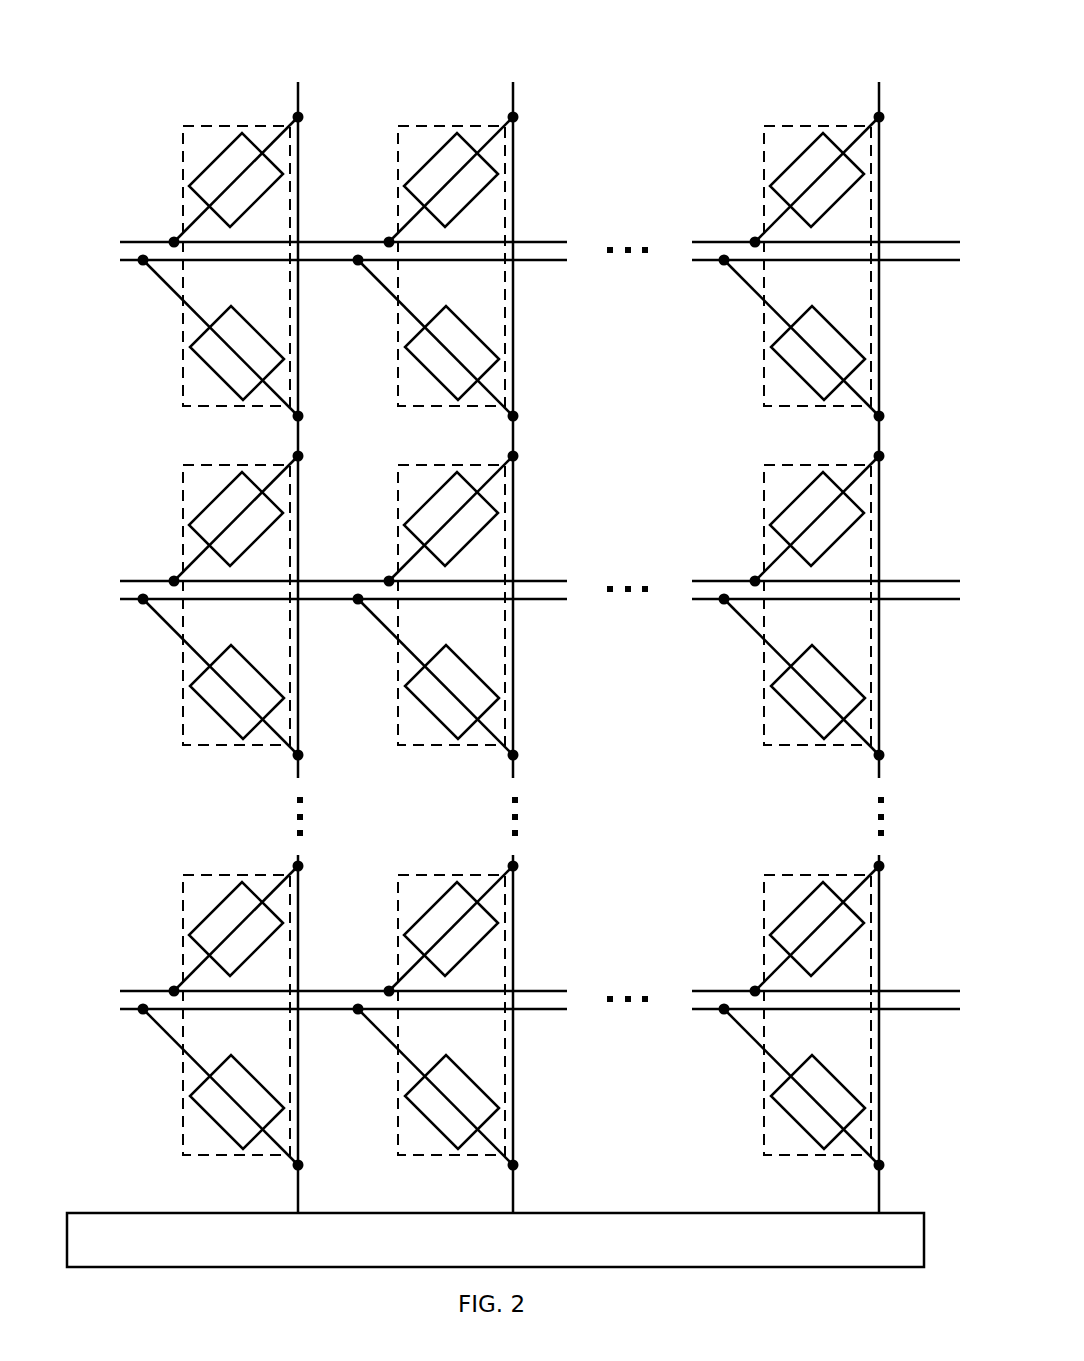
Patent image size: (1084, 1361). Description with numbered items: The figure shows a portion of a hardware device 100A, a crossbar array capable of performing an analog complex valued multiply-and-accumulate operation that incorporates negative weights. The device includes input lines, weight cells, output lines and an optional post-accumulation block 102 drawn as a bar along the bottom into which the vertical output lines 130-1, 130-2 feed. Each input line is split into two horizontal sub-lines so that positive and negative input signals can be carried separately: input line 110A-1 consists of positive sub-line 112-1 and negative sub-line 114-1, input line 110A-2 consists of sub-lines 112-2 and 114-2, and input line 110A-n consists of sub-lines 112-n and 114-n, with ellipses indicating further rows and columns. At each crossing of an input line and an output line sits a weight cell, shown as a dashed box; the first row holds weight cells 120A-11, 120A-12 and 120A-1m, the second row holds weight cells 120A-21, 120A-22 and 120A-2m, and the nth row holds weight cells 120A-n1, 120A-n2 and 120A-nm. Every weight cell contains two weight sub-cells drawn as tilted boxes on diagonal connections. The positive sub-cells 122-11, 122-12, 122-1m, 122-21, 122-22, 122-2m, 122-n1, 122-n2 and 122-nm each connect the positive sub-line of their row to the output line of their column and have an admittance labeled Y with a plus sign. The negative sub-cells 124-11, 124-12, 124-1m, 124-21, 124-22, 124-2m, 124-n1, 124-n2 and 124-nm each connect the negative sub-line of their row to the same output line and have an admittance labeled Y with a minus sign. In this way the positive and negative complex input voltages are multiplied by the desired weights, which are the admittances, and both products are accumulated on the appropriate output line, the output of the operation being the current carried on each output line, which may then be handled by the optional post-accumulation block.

The hardware device 100A is at (527, 33).
The optional post-accumulation block 102 is at (495, 1240).
The input line 110A-1 is at (117, 251).
The input line 110A-2 is at (117, 590).
The input line 110A-n is at (117, 1000).
The input sub-line 112-1 is at (538, 242).
The input sub-line 112-2 is at (538, 581).
The input sub-line 112-n is at (538, 991).
The input sub-line 114-1 is at (538, 262).
The input sub-line 114-2 is at (538, 601).
The input sub-line 114-n is at (538, 1011).
The weight cell 120A-11 is at (185, 368).
The weight cell 120A-12 is at (400, 368).
The weight cell 120A-1m is at (766, 368).
The weight cell 120A-21 is at (185, 707).
The weight cell 120A-22 is at (400, 707).
The weight cell 120A-2m is at (766, 707).
The weight cell 120A-n1 is at (185, 1117).
The weight cell 120A-n2 is at (400, 1117).
The weight cell 120A-nm is at (766, 1117).
The positive sub-cell 122-11 is at (206, 169).
The positive sub-cell 122-12 is at (421, 169).
The positive sub-cell 122-1m is at (787, 169).
The positive sub-cell 122-21 is at (206, 508).
The positive sub-cell 122-22 is at (421, 508).
The positive sub-cell 122-2m is at (787, 508).
The positive sub-cell 122-n1 is at (206, 918).
The positive sub-cell 122-n2 is at (421, 918).
The positive sub-cell 122-nm is at (787, 918).
The negative sub-cell 124-11 is at (190, 346).
The negative sub-cell 124-12 is at (405, 346).
The negative sub-cell 124-1m is at (771, 346).
The negative sub-cell 124-21 is at (190, 685).
The negative sub-cell 124-22 is at (405, 685).
The negative sub-cell 124-2m is at (771, 685).
The negative sub-cell 124-n1 is at (190, 1095).
The negative sub-cell 124-n2 is at (405, 1095).
The negative sub-cell 124-nm is at (771, 1095).
The output line 130-1 is at (298, 108).
The output line 130-2 is at (513, 108).